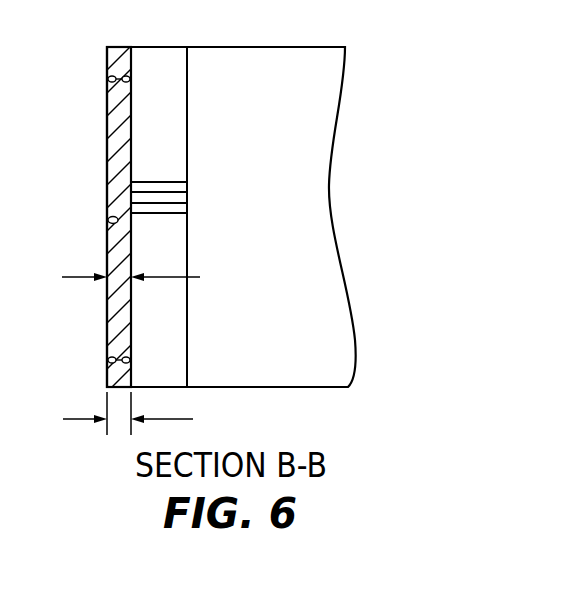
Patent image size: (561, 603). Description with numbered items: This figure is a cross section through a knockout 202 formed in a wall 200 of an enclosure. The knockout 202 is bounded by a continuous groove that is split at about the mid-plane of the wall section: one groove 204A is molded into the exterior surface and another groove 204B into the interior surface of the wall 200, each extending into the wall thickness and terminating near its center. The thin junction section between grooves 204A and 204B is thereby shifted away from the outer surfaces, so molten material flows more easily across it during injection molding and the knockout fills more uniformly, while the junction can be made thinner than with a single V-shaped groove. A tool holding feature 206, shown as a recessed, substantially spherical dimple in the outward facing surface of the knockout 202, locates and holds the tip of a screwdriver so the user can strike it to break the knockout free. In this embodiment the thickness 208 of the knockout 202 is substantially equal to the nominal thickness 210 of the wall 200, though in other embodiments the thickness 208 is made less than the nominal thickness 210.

The wall 200 is at (131, 63).
The knockout 202 is at (107, 137).
The groove 204A is at (107, 79).
The groove 204B is at (130, 79).
The tool holding feature 206 is at (108, 220).
The thickness of knockout 208 is at (153, 279).
The nominal thickness of the wall 210 is at (150, 413).